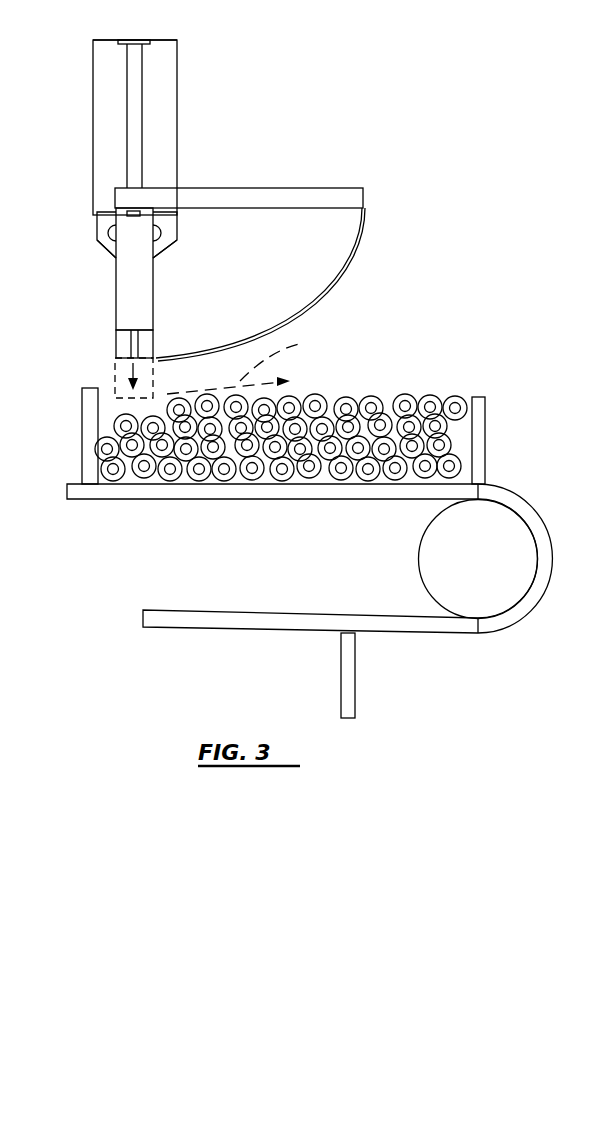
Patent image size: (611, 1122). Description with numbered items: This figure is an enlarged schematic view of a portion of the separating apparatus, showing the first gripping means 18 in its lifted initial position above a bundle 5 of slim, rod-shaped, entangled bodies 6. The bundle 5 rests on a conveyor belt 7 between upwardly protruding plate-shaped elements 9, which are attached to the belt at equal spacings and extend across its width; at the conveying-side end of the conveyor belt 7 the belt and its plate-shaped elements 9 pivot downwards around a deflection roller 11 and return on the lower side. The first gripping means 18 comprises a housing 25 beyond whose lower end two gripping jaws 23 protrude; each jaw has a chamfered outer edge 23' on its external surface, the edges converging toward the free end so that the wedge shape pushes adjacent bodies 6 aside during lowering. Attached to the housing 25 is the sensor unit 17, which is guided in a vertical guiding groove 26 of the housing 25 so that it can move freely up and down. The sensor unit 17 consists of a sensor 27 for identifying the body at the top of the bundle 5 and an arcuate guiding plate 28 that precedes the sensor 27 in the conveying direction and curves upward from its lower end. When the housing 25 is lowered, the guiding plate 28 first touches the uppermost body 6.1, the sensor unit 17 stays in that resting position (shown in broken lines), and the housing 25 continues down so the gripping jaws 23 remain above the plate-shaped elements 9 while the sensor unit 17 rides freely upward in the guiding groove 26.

The bundle 5 is at (415, 353).
The slim bodies 6 is at (328, 408).
The uppermost body 6.1 is at (177, 398).
The conveyor belt 7 is at (310, 490).
The plate-shaped elements 9 is at (82, 420).
The deflection roller 11 is at (425, 572).
The sensor unit 17 is at (272, 186).
The first gripping means 18 is at (187, 97).
The gripping jaws 23 is at (132, 235).
The chamfered outer edge 23' is at (131, 260).
The housing 25 is at (166, 133).
The guiding groove 26 is at (133, 123).
The sensor 27 is at (141, 342).
The arcuate guiding plate 28 is at (318, 284).